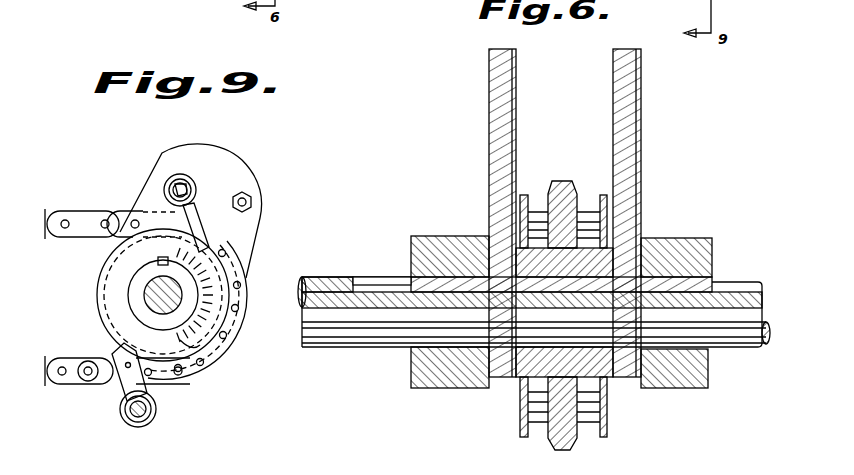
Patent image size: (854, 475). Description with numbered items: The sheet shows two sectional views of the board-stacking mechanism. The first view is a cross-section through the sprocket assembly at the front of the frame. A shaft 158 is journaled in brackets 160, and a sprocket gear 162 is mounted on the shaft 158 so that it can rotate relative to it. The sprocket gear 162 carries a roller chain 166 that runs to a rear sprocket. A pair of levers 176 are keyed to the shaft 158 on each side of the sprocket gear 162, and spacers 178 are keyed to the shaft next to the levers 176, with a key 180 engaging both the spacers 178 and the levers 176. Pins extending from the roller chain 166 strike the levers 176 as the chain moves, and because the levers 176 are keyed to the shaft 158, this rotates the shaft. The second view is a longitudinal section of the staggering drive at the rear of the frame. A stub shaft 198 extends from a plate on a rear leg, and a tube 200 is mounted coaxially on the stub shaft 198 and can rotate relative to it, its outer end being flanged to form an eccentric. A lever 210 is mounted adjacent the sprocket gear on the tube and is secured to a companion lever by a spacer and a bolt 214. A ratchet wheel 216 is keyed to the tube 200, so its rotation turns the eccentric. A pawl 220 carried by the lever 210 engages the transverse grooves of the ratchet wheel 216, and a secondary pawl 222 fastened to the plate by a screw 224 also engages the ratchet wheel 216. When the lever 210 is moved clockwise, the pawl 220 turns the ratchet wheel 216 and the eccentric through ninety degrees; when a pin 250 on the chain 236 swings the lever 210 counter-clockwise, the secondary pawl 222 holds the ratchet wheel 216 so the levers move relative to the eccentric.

In FIG. 6, the shaft 158 is at (738, 320).
In FIG. 6, the brackets 160 is at (714, 286).
In FIG. 6, the sprocket gear 162 is at (578, 168).
In FIG. 6, the roller chain 166 is at (530, 400).
In FIG. 6, the levers 176 is at (495, 138).
In FIG. 6, the spacers 178 is at (425, 386).
In FIG. 6, the key 180 is at (405, 278).
In FIG. 9, the stub shaft 198 is at (146, 294).
In FIG. 9, the tube 200 is at (135, 305).
In FIG. 9, the lever 210 is at (242, 180).
In FIG. 9, the bolt 214 is at (252, 202).
In FIG. 9, the ratchet wheel 216 is at (172, 183).
In FIG. 9, the pawl 220 is at (196, 236).
In FIG. 6, the secondary pawl 222 is at (658, 8).
In FIG. 9, the secondary pawl 222 is at (120, 396).
In FIG. 9, the screw 224 is at (157, 410).
In FIG. 9, the chain 236 is at (100, 202).
In FIG. 9, the pin 250 is at (88, 382).